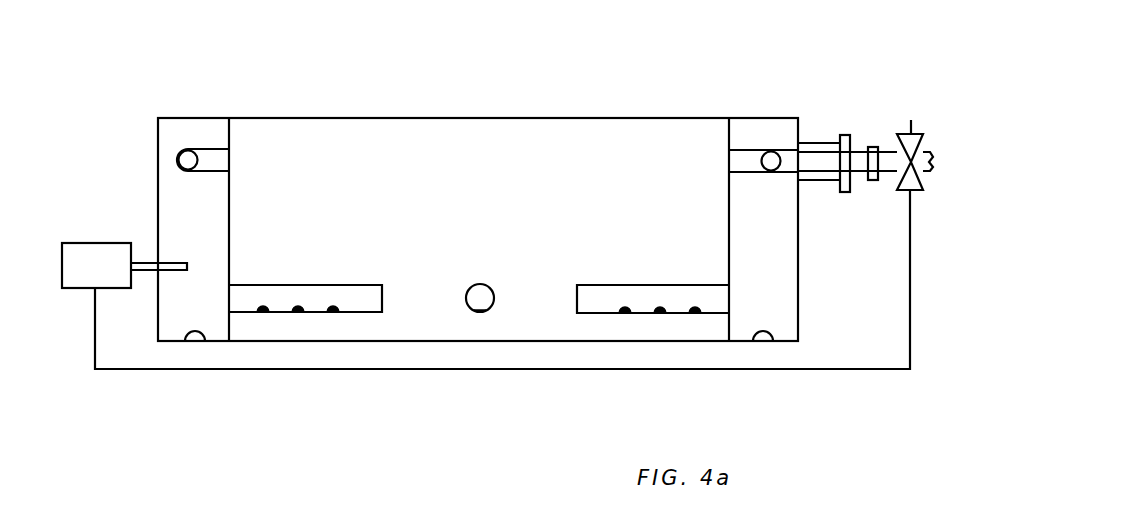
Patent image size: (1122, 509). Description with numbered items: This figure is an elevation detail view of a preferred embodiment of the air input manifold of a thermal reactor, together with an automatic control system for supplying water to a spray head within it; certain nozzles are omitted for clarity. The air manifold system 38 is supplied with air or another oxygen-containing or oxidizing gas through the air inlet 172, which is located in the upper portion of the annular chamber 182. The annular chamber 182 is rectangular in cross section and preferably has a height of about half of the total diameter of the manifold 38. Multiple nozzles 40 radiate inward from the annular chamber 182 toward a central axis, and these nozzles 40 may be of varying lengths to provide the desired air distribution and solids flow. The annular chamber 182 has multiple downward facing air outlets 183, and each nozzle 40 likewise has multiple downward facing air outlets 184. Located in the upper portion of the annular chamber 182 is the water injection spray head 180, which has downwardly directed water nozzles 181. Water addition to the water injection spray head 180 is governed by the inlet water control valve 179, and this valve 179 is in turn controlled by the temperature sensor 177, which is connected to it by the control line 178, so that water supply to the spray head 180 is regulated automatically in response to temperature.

The air manifold system 38 is at (507, 112).
The nozzle 40 is at (372, 298).
The air inlet 172 is at (818, 152).
The temperature sensor 177 is at (105, 247).
The control line 178 is at (545, 370).
The inlet water control valve 179 is at (910, 132).
The water injection spray head 180 is at (210, 152).
The water nozzle 181 is at (213, 168).
The annular chamber 182 is at (772, 270).
The air outlet 183 is at (197, 343).
The air outlet 184 is at (335, 313).